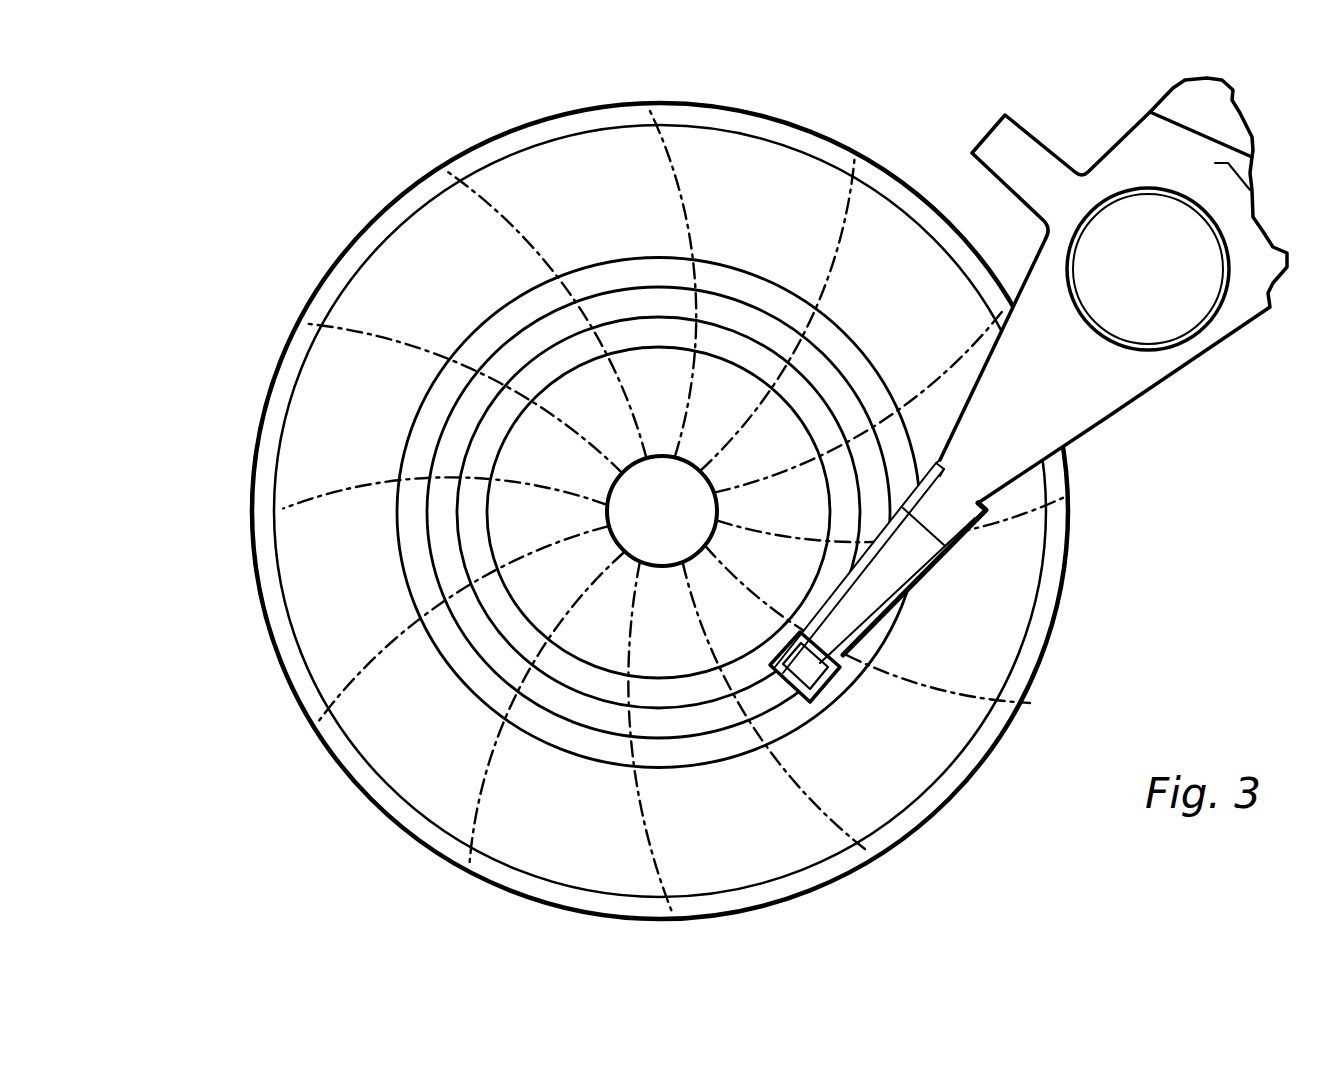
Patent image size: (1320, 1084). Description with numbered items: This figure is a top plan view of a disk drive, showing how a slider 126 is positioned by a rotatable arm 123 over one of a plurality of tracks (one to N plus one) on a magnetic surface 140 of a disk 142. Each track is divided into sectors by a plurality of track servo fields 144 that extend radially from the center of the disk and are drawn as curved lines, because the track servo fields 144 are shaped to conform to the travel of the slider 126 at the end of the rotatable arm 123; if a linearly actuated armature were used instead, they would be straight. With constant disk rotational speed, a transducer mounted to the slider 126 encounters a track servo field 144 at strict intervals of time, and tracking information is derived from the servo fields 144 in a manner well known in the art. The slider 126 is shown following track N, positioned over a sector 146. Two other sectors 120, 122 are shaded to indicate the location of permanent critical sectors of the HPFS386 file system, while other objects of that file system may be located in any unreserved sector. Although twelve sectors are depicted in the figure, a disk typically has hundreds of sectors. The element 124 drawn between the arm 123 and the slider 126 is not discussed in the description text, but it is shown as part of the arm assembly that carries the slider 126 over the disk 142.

The sector 120 is at (540, 330).
The sector 122 is at (610, 307).
The arm 123 is at (978, 370).
The load beam / suspension arm 124 is at (823, 603).
The slider 126 is at (826, 687).
The magnetic surface 140 is at (397, 206).
The disk 142 is at (322, 282).
The track servo fields 144 is at (475, 192).
The sector 146 is at (755, 715).